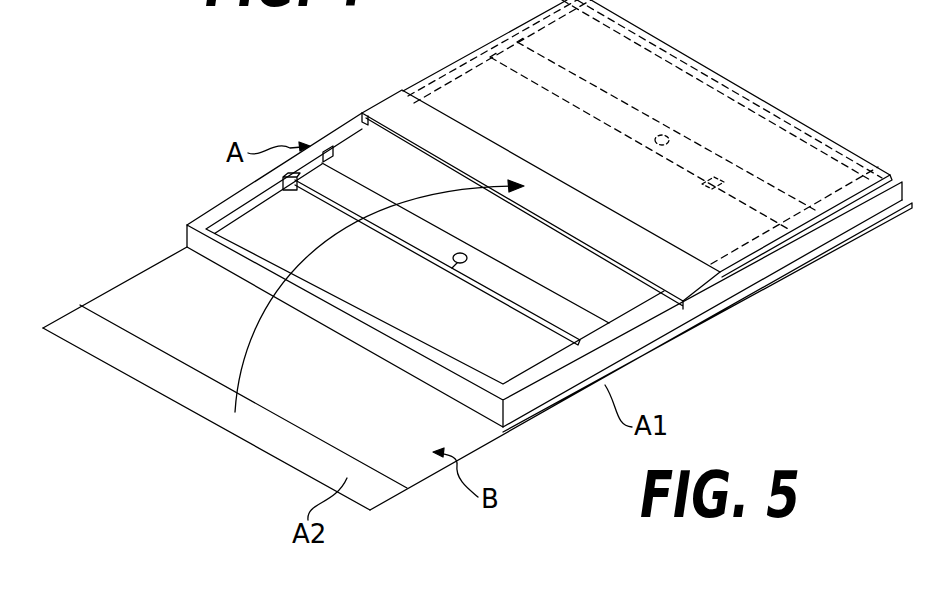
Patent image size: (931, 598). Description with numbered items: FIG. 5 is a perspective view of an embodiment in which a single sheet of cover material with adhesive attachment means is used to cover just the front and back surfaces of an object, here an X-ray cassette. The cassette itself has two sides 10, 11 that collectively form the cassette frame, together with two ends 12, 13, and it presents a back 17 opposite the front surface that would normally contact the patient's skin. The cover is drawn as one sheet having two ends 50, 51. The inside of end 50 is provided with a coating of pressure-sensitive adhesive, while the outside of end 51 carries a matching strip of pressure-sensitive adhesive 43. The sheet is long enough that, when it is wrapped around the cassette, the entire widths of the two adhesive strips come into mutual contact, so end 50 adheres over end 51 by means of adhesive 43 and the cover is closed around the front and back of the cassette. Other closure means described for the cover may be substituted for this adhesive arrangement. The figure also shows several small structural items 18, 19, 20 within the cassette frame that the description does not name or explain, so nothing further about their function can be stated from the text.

The side 10 is at (653, 334).
The side 11 is at (332, 135).
The end 12 is at (676, 36).
The end 13 is at (380, 350).
The back 17 is at (582, 284).
The rod 18 is at (537, 306).
The hook 19 is at (453, 267).
The bracket 20 is at (296, 192).
The pressure-sensitive adhesive 43 is at (698, 283).
The end 50 is at (157, 393).
The end 51 is at (396, 143).